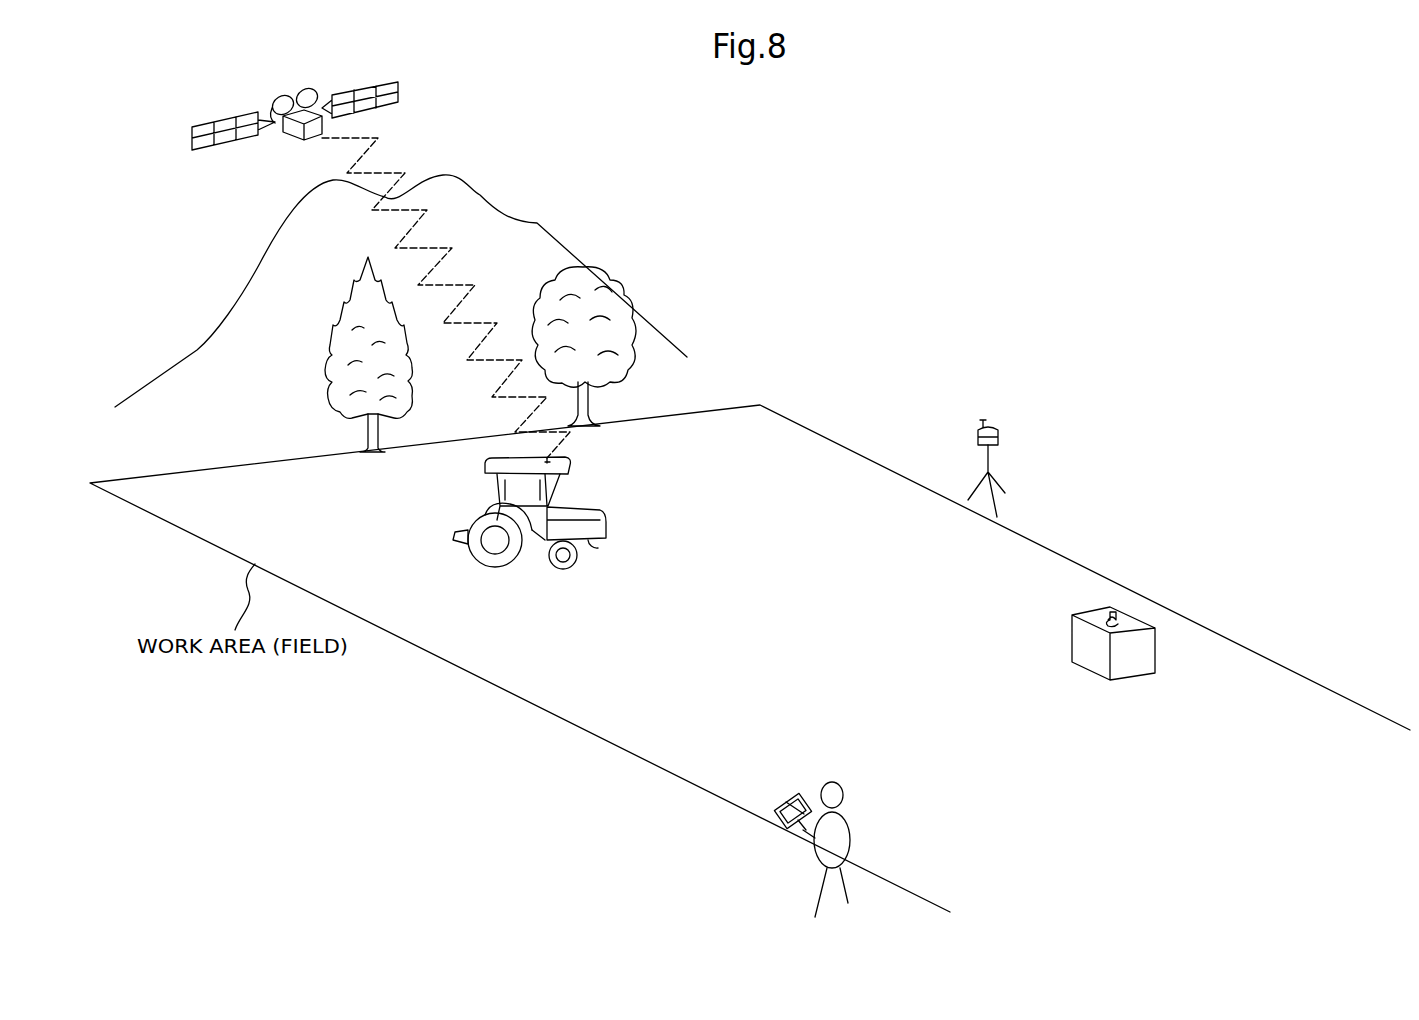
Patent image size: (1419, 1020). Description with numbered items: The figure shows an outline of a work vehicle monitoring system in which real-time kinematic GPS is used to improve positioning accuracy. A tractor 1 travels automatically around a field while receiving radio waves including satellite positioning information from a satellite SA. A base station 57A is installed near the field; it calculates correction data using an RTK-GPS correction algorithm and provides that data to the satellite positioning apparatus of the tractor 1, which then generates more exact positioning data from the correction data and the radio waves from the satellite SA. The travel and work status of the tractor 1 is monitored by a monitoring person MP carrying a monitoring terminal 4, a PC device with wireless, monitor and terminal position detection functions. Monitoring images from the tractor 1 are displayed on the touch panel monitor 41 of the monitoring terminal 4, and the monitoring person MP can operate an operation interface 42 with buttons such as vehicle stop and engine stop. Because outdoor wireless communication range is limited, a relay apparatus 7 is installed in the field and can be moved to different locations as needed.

The satellite SA is at (252, 94).
The tractor 1 is at (493, 487).
The base station 57A is at (998, 433).
The relay apparatus 7 is at (1132, 680).
The monitoring terminal 4 is at (790, 798).
The touch panel monitor 41 is at (785, 814).
The operation interface 42 is at (781, 828).
The monitoring person MP is at (852, 841).